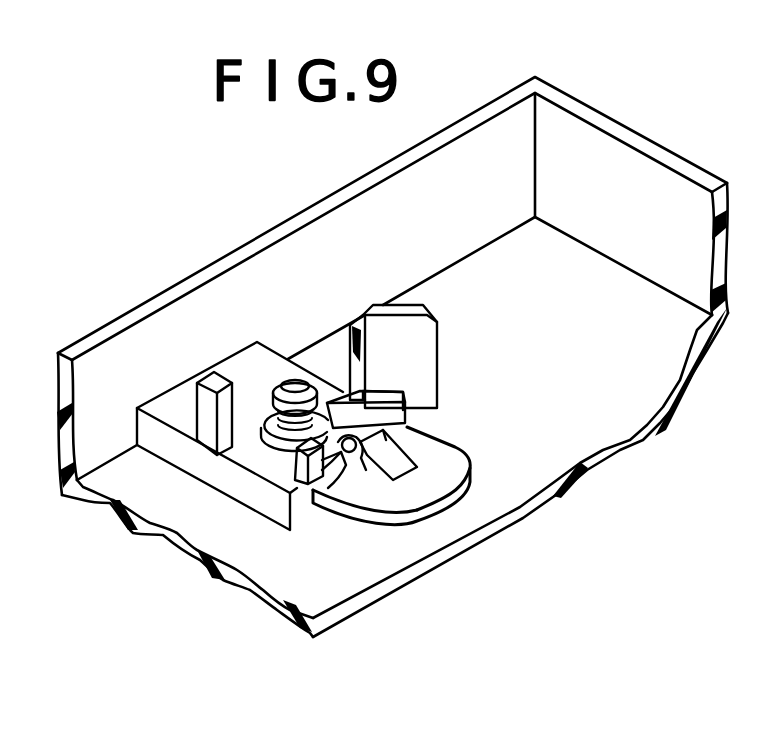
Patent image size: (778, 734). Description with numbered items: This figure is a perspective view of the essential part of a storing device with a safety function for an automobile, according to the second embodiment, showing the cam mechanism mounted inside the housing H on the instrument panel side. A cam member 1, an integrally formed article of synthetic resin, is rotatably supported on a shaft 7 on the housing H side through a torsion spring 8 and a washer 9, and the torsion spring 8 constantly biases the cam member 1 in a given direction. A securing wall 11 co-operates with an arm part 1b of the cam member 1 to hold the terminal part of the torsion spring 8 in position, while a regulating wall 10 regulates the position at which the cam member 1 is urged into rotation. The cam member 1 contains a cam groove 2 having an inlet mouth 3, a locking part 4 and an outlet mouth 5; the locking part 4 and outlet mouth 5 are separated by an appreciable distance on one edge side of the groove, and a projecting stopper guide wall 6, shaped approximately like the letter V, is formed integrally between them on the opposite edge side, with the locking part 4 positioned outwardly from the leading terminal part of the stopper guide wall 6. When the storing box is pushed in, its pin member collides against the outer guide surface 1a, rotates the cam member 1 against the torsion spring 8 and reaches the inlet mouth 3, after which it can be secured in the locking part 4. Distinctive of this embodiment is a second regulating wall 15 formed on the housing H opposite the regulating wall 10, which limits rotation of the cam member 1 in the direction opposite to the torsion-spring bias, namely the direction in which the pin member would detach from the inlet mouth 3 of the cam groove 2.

The housing H is at (597, 143).
The cam member 1 is at (453, 470).
The outer guide surface 1a is at (433, 512).
The arm part 1b is at (393, 398).
The cam groove 2 is at (327, 405).
The inlet mouth 3 is at (313, 505).
The locking part 4 is at (323, 480).
The outlet mouth 5 is at (392, 438).
The stopper guide wall 6 is at (350, 455).
The shaft 7 is at (292, 374).
The torsion spring 8 is at (252, 410).
The washer 9 is at (270, 400).
The regulating wall 10 is at (250, 475).
The securing wall 11 is at (203, 411).
The second regulating wall 15 is at (420, 345).